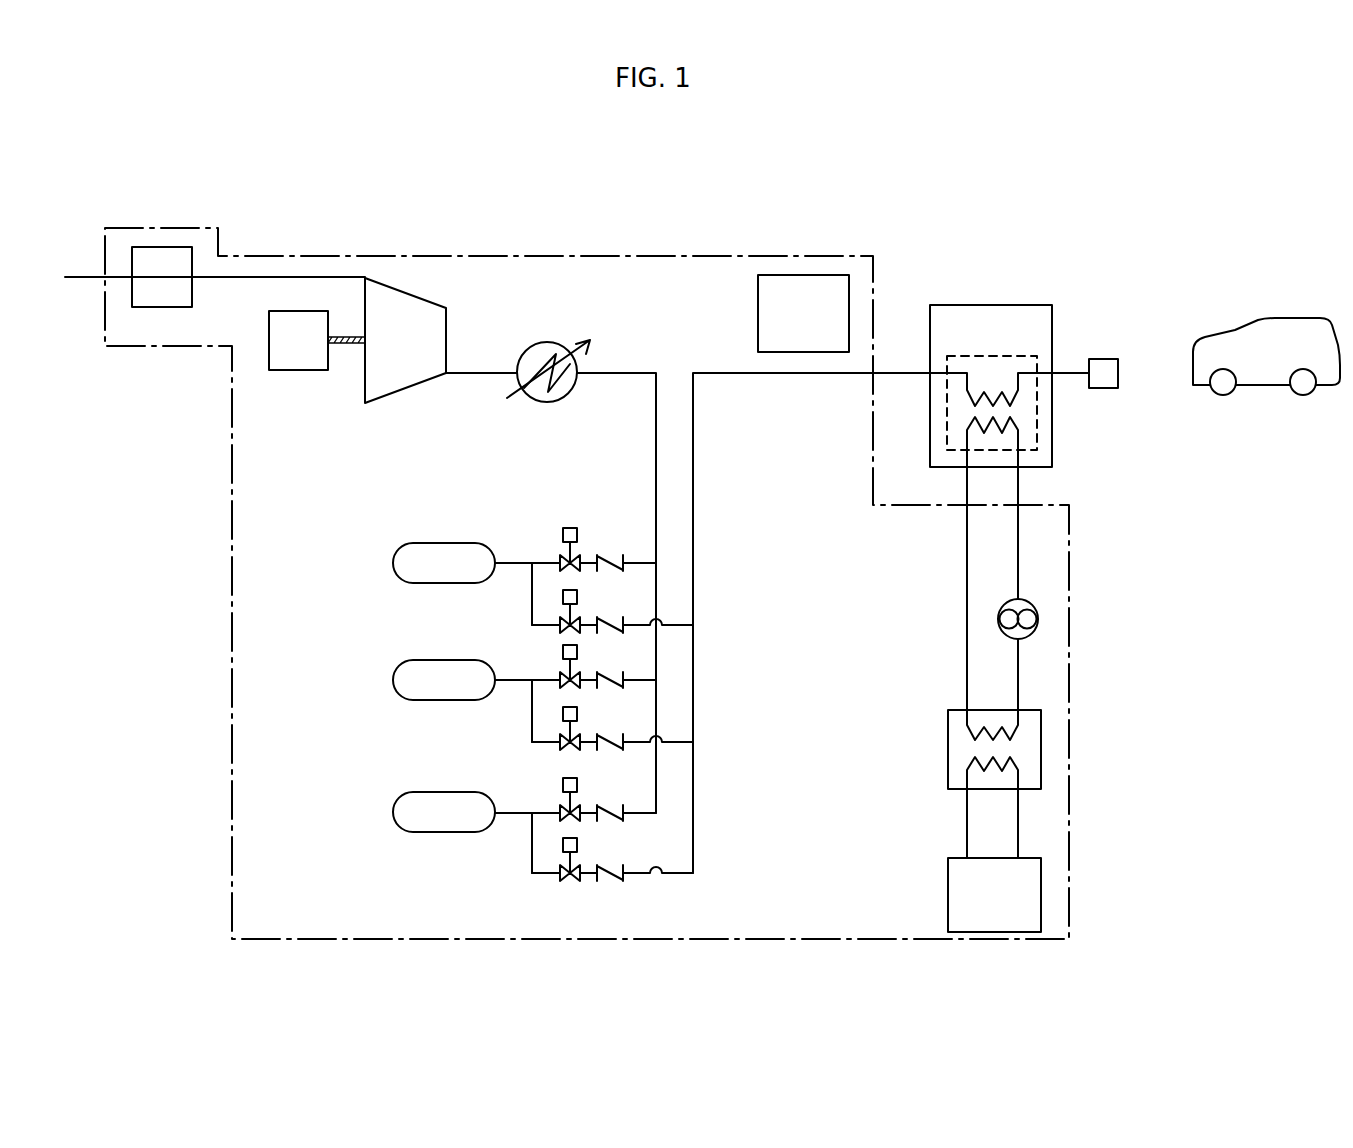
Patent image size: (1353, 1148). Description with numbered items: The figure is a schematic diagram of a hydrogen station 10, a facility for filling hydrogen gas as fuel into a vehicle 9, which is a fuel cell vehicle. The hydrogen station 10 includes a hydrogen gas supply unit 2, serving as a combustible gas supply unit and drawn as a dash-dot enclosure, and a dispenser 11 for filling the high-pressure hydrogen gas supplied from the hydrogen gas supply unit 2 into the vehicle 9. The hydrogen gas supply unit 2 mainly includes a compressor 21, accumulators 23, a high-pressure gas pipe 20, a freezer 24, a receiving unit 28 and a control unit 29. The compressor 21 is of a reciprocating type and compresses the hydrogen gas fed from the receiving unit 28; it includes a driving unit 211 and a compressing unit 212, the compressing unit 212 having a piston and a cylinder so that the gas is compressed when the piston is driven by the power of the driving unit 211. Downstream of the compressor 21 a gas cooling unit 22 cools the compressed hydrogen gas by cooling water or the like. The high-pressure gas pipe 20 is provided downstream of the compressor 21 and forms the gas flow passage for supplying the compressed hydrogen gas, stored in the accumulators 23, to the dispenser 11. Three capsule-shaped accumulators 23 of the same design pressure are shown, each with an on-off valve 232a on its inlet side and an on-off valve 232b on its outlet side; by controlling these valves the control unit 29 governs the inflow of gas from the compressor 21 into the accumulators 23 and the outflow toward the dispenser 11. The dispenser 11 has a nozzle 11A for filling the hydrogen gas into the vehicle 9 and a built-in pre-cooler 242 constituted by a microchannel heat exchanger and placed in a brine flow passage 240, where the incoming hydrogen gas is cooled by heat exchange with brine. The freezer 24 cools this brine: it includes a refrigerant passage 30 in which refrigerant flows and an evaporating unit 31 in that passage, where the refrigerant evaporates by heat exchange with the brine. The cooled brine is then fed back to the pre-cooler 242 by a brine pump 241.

The hydrogen gas supply unit 2 is at (875, 296).
The vehicle 9 is at (1263, 390).
The hydrogen station 10 is at (910, 200).
The dispenser 11 is at (985, 305).
The nozzle 11A is at (1100, 359).
The high-pressure gas pipe 20 is at (278, 277).
The compressor 21 is at (315, 200).
The driving unit 211 is at (302, 311).
The compressing unit 212 is at (410, 295).
The gas cooling unit 22 is at (544, 336).
The accumulators 23 is at (413, 583).
The on-off valve 232a is at (578, 535).
The on-off valve 232b is at (578, 597).
The freezer 24 is at (1160, 786).
The brine flow passage 240 is at (1020, 670).
The brine pump 241 is at (1040, 597).
The pre-cooler 242 is at (1037, 430).
The receiving unit 28 is at (163, 247).
The control unit 29 is at (784, 275).
The refrigerant passage 30 is at (1020, 820).
The evaporating unit 31 is at (1041, 748).